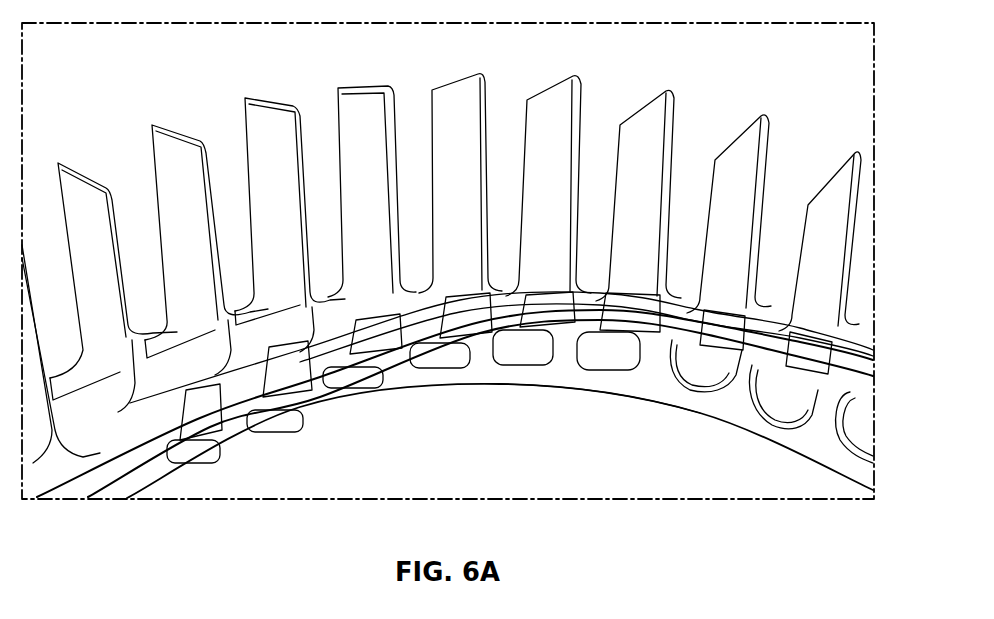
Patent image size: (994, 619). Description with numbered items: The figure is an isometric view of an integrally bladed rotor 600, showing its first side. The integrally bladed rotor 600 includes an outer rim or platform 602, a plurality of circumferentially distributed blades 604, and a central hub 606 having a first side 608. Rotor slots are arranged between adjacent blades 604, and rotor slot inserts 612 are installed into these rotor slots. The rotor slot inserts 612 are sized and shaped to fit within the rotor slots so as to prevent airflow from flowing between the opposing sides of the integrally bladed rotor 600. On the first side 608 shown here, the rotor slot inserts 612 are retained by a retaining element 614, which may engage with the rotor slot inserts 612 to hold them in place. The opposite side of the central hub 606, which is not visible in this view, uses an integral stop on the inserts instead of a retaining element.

The integrally bladed rotor 600 is at (141, 106).
The outer rim or platform 602 is at (847, 370).
The blades 604 is at (349, 107).
The central hub 606 is at (683, 445).
The first side 608 is at (577, 468).
The rotor slot inserts 612 is at (287, 367).
The retaining element 614 is at (445, 377).